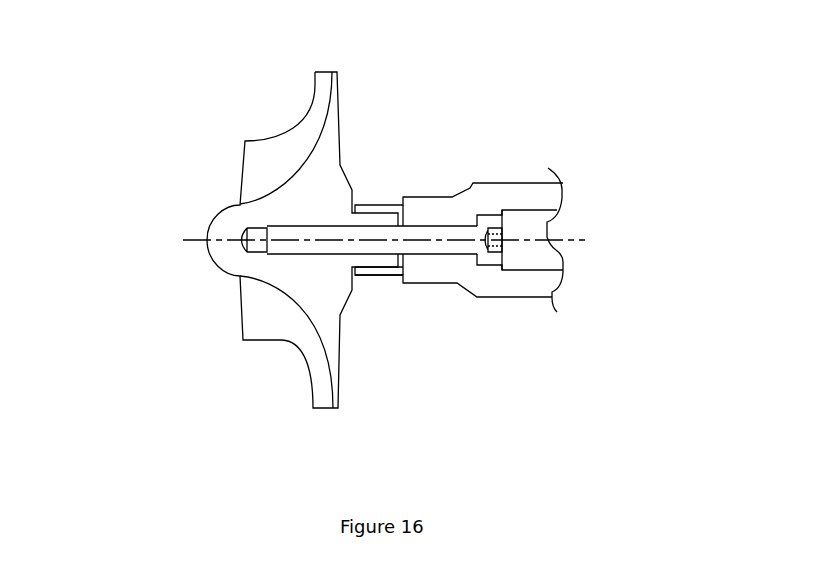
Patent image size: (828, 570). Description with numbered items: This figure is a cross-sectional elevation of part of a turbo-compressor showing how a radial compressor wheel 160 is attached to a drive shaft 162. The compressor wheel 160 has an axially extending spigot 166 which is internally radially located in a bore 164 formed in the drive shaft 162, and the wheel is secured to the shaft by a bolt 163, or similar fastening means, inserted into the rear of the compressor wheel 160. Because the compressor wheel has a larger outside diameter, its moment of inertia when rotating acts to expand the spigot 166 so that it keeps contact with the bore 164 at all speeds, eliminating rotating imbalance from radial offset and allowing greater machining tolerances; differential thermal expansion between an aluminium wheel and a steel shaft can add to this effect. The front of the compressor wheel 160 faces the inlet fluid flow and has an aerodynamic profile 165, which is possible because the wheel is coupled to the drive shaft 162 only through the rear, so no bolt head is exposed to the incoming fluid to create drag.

The radial compressor wheel 160 is at (345, 88).
The drive shaft 162 is at (378, 197).
The bolt 163 is at (455, 217).
The bore 164 is at (380, 275).
The aerodynamic profile 165 is at (213, 267).
The axially extending spigot 166 is at (367, 263).